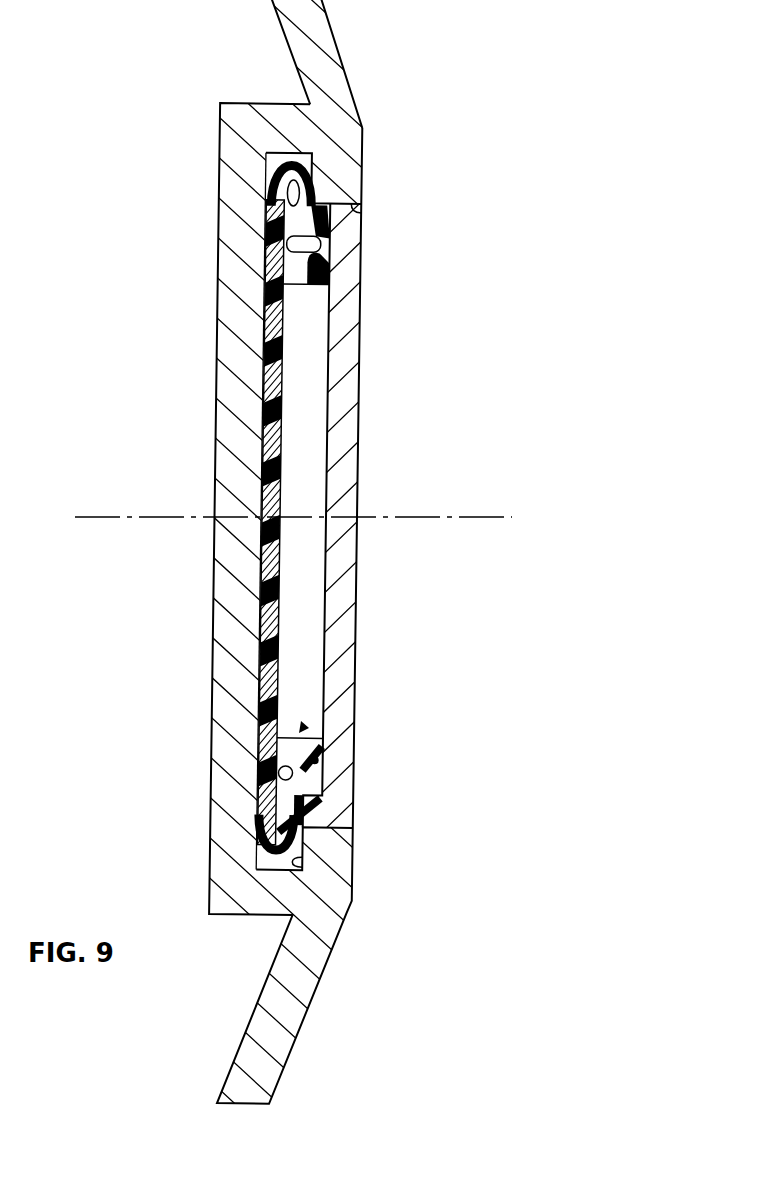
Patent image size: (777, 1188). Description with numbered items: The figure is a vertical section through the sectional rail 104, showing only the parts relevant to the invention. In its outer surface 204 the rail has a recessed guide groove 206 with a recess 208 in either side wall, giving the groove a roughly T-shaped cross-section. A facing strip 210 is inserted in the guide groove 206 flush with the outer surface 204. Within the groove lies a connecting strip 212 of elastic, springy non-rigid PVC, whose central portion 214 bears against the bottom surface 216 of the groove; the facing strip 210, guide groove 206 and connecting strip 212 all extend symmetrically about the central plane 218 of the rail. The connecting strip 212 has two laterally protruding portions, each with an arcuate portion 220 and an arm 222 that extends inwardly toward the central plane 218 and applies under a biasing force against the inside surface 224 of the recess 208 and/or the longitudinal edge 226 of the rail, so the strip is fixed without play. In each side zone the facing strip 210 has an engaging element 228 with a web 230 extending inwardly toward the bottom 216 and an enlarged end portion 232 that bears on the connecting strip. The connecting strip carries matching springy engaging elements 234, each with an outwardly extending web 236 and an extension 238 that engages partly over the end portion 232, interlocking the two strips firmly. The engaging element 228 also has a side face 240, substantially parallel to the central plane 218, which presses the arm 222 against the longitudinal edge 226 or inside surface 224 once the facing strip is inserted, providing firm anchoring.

The sectional rail 104 is at (340, 120).
The outer surface 204 is at (364, 142).
The guide groove 206 is at (350, 211).
The recess 208 is at (270, 170).
The facing strip 210 is at (345, 391).
The connecting strip 212 is at (283, 316).
The central portion 214 is at (267, 397).
The bottom surface 216 is at (263, 447).
The central plane 218 is at (409, 517).
The arcuate portion 220 is at (270, 189).
The arm 222 is at (277, 223).
The inside surface 224 is at (300, 868).
The longitudinal edge 226 is at (307, 832).
The engaging element 228 is at (273, 813).
The web 230 is at (287, 792).
The end portion 232 is at (280, 767).
The engaging element 234 is at (302, 727).
The web 236 is at (300, 750).
The extension 238 is at (315, 760).
The side face 240 is at (330, 224).